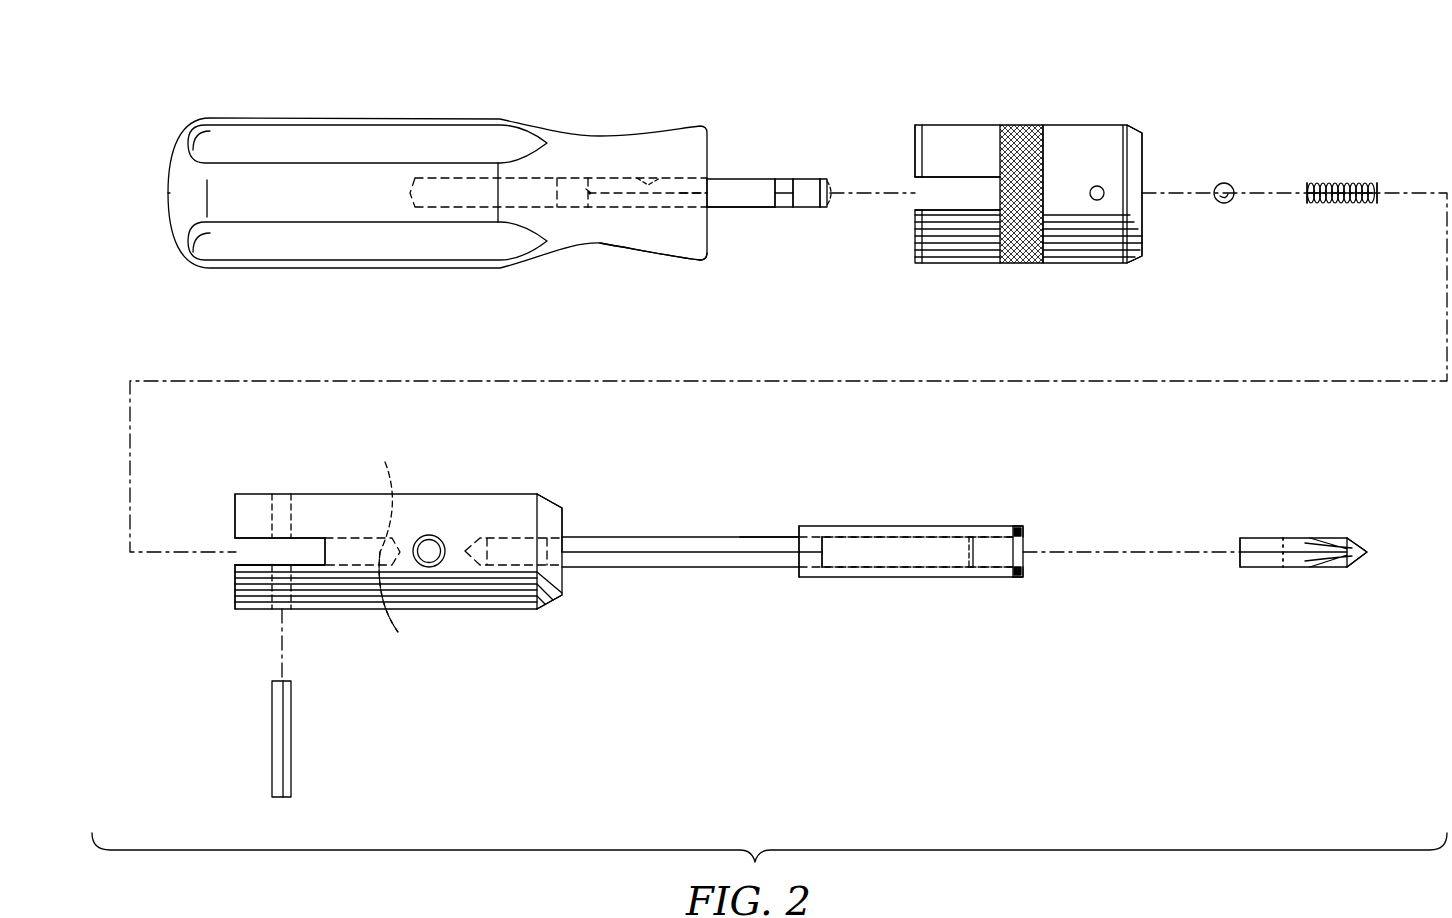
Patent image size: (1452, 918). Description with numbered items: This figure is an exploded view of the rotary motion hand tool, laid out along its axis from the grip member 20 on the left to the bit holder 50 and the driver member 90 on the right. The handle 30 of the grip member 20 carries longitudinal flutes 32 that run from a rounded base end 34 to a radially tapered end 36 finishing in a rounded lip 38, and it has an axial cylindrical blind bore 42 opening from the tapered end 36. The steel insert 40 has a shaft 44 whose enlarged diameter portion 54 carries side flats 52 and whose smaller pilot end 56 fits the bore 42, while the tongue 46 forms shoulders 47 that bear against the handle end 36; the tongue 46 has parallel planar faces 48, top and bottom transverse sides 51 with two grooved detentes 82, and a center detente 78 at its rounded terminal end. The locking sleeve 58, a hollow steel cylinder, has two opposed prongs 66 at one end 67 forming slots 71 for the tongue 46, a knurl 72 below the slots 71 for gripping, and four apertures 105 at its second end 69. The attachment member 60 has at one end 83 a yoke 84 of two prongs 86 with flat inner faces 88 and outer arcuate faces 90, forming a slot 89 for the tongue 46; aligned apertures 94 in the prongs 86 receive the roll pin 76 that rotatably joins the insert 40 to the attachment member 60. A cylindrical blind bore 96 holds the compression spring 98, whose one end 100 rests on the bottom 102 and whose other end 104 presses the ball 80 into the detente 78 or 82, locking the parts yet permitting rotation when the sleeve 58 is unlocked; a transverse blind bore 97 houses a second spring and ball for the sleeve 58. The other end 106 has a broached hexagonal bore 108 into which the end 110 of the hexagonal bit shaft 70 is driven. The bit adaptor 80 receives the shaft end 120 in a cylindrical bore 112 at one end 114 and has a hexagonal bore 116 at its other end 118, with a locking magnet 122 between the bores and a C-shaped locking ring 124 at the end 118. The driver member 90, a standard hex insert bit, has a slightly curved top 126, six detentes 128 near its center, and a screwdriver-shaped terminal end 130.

The grip member 20 is at (479, 182).
The handle 30 is at (463, 118).
The flutes 32 is at (210, 146).
The rounded base end 34 is at (168, 193).
The tapered end 36 is at (632, 248).
The rounded lip 38 is at (702, 258).
The insert 40 is at (766, 178).
The cylindrical blind bore 42 is at (472, 178).
The shaft 44 is at (710, 179).
The tongue 46 is at (817, 178).
The shoulders 47 is at (686, 185).
The parallel planar faces 48 is at (750, 208).
The bit holder 50 is at (612, 528).
The top and bottom transverse sides 51 is at (764, 196).
The side flats 52 is at (607, 178).
The enlarged diameter portion 54 is at (632, 178).
The pilot end 56 is at (564, 207).
The locking sleeve 58 is at (1002, 194).
The attachment member 60 is at (763, 552).
The prongs 66 is at (957, 137).
The end 67 is at (915, 127).
The second end 69 is at (1112, 123).
The bit shaft 70 is at (739, 532).
The slots 71 is at (922, 200).
The knurl 72 is at (1018, 135).
The roll pin 76 is at (292, 734).
The center detente 78 is at (832, 183).
The ball 80 is at (1226, 183).
The grooved detentes 82 is at (788, 195).
The end 83 is at (235, 514).
The yoke 84 is at (232, 591).
The prongs 86 is at (335, 510).
The flat inner face 88 is at (250, 562).
The slot 89 is at (250, 546).
The driver member 90 is at (302, 494).
The apertures 94 is at (275, 494).
The cylindrical blind bore 96 is at (362, 536).
The blind bore 97 is at (429, 567).
The compression spring 98 is at (1362, 183).
The end 100 is at (1377, 197).
The bottom 102 is at (402, 607).
The other end 104 is at (1307, 197).
The apertures 105 is at (1097, 200).
The other end 106 is at (545, 500).
The bore 108 is at (478, 565).
The end 110 is at (548, 606).
The cylindrical bore 112 is at (814, 550).
The end 114 is at (799, 571).
The hexagonal bore 116 is at (990, 551).
The end 118 is at (1023, 573).
The end 120 is at (867, 568).
The locking magnet 122 is at (920, 555).
The locking ring 124 is at (1021, 534).
The curved top 126 is at (1237, 558).
The detentes 128 is at (1283, 555).
The terminal end 130 is at (1355, 541).